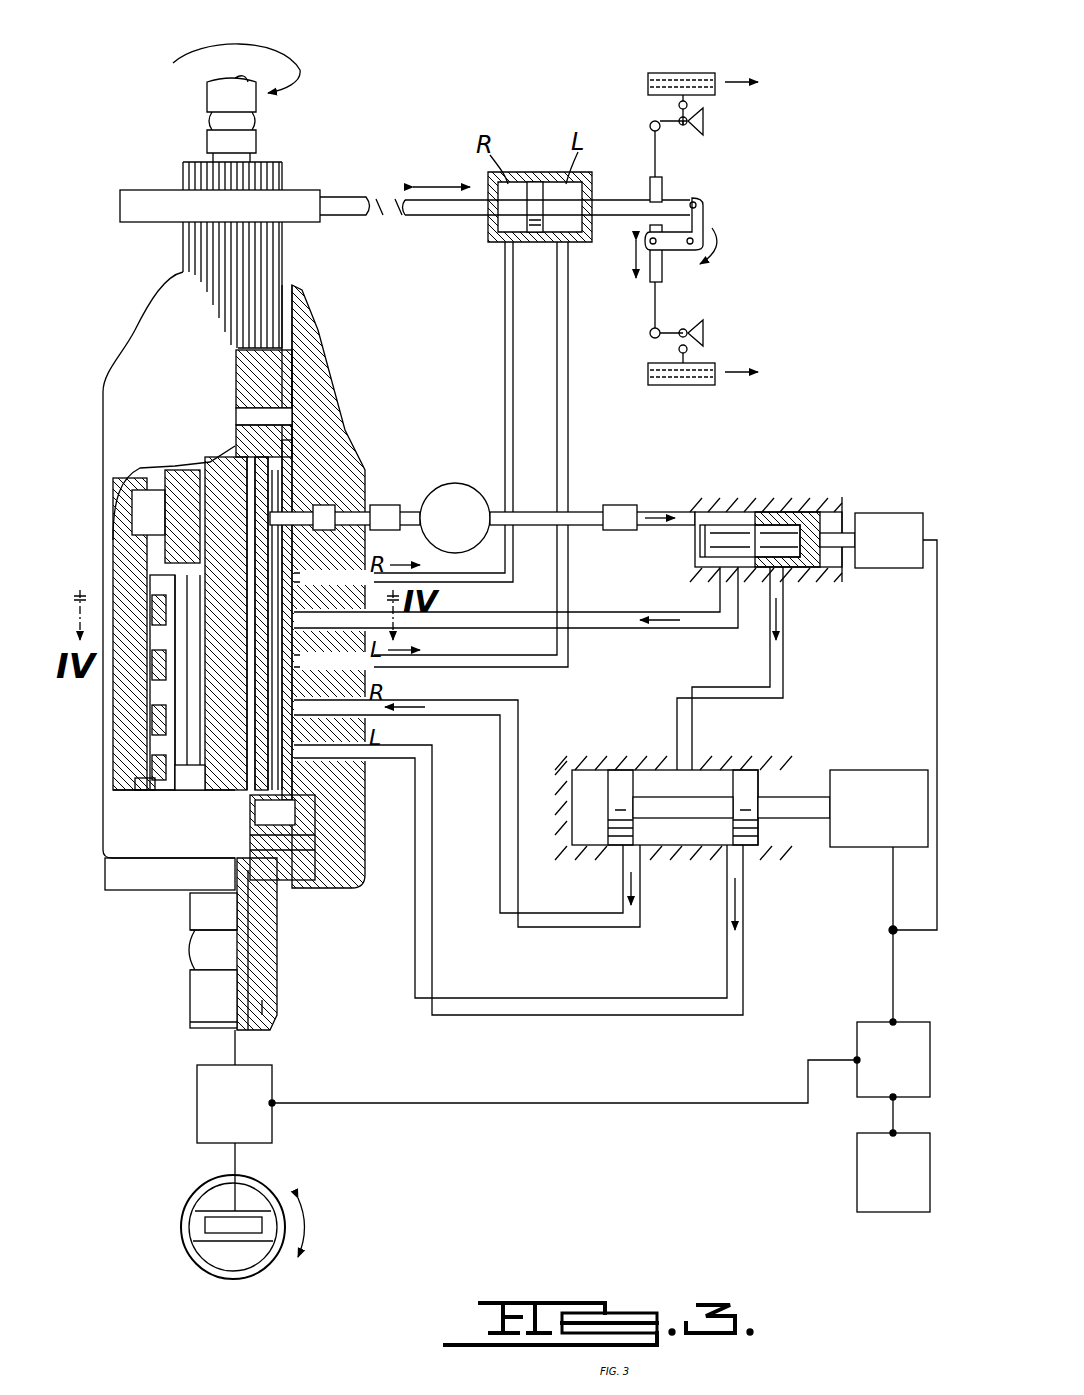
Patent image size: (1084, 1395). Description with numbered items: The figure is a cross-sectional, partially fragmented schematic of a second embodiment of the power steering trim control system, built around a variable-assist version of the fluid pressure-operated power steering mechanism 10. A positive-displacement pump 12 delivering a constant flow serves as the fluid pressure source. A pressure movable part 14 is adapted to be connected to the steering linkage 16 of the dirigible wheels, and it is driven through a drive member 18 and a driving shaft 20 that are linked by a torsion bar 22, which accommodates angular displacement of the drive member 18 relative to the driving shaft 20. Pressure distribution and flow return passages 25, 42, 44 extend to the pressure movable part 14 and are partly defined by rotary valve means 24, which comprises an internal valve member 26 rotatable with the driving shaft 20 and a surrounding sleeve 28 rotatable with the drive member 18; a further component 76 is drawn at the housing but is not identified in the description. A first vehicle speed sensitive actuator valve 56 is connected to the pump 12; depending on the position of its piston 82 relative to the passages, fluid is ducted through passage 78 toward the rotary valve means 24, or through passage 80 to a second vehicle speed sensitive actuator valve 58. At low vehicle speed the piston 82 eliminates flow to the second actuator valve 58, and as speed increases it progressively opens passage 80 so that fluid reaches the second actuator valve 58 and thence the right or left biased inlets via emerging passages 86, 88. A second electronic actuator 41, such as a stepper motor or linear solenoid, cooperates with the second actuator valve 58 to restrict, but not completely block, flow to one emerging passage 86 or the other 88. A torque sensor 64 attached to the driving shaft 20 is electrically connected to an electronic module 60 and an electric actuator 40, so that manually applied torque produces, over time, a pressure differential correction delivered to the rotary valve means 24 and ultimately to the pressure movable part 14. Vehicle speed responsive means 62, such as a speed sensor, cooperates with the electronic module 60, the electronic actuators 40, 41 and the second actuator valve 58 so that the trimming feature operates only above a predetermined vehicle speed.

The fluid pressure-operated power steering mechanism 10 is at (368, 418).
The pump 12 is at (450, 484).
The pressure movable part 14 is at (538, 183).
The steering linkage 16 is at (705, 214).
The drive member 18 is at (143, 198).
The driving shaft 20 is at (194, 1003).
The torsion bar 22 is at (236, 452).
The rotary valve means 24 is at (353, 868).
The pressure distribution and flow return passage 25 is at (368, 540).
The internal valve member 26 is at (200, 778).
The surrounding sleeve 28 is at (152, 792).
The electric actuator 40 is at (885, 526).
The second electronic actuator 41 is at (840, 770).
The pressure distribution and flow return passage 42 is at (505, 386).
The pressure distribution and flow return passage 44 is at (568, 392).
The first vehicle speed sensitive actuator valve means 56 is at (716, 509).
The second vehicle speed sensitive actuator valve means 58 is at (740, 768).
The electronic module 60 is at (857, 1030).
The vehicle speed responsive means 62 is at (857, 1162).
The torque sensor 64 is at (197, 1105).
The housing port 76 is at (357, 498).
The passage 78 is at (527, 627).
The passage 80 is at (783, 674).
The piston 82 is at (777, 510).
The emerging passage 86 is at (567, 918).
The emerging passage 88 is at (560, 1010).